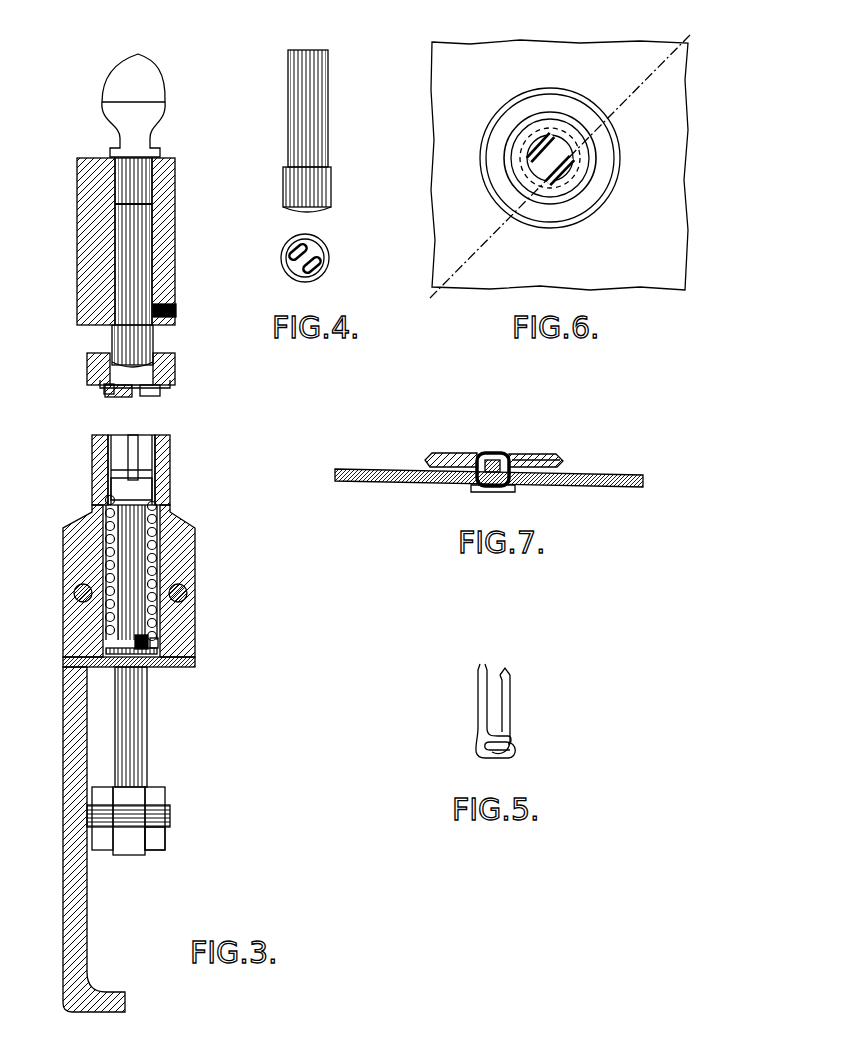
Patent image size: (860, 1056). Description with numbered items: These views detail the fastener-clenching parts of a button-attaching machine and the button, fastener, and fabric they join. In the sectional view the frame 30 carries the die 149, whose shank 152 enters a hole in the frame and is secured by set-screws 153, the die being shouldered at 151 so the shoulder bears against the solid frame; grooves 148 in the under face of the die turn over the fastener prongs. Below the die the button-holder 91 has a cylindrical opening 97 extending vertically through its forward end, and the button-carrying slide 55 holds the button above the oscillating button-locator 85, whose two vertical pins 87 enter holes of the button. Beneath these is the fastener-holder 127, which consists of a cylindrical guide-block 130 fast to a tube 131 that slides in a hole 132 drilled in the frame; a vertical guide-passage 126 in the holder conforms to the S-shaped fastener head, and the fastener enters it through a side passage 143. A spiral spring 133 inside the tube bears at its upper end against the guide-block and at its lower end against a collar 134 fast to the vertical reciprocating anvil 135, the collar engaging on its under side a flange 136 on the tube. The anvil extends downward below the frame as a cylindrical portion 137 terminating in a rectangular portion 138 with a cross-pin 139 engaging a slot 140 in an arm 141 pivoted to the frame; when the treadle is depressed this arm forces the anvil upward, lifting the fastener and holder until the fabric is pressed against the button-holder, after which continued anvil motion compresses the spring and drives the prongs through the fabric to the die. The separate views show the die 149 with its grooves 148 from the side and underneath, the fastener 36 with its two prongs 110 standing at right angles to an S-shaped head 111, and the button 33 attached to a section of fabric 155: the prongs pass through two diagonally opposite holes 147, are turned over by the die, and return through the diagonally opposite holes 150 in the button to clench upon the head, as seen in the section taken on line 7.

In FIG. 6, the section line 7 7 is at (562, 171).
In FIG. 3, the frame 30 is at (80, 935).
In FIG. 6, the button 33 is at (535, 96).
In FIG. 7, the button 33 is at (560, 462).
In FIG. 5, the fastener 36 is at (478, 712).
In FIG. 3, the button-carrying slide 55 is at (104, 388).
In FIG. 3, the button-locator 85 is at (160, 392).
In FIG. 3, the vertical pins 87 is at (110, 392).
In FIG. 3, the button-holder 91 is at (87, 372).
In FIG. 3, the cylindrical opening 97 is at (92, 360).
In FIG. 6, the prongs 110 is at (565, 180).
In FIG. 7, the prongs 110 is at (495, 452).
In FIG. 5, the prongs 110 is at (478, 700).
In FIG. 7, the S-shaped head 111 is at (495, 492).
In FIG. 5, the S-shaped head 111 is at (472, 748).
In FIG. 3, the vertical guide-passage 126 is at (133, 445).
In FIG. 3, the fastener-holder 127 is at (111, 482).
In FIG. 3, the cylindrical guide-block 130 is at (155, 455).
In FIG. 3, the tube 131 is at (155, 480).
In FIG. 3, the hole 132 is at (160, 530).
In FIG. 3, the spiral spring 133 is at (157, 568).
In FIG. 3, the collar 134 is at (100, 648).
In FIG. 3, the anvil 135 is at (118, 618).
In FIG. 3, the flange 136 is at (160, 656).
In FIG. 3, the cylindrical portion 137 is at (147, 752).
In FIG. 3, the rectangular portion 138 is at (130, 803).
In FIG. 3, the cross-pin 139 is at (165, 820).
In FIG. 3, the slot 140 is at (165, 832).
In FIG. 3, the arm 141 is at (155, 845).
In FIG. 3, the side passage 143 is at (92, 450).
In FIG. 6, the holes 147 is at (575, 158).
In FIG. 7, the holes 147 is at (520, 454).
In FIG. 4, the grooves 148 is at (322, 213).
In FIG. 3, the die 149 is at (140, 358).
In FIG. 4, the die 149 is at (283, 200).
In FIG. 6, the holes 150 is at (545, 130).
In FIG. 7, the holes 150 is at (478, 480).
In FIG. 3, the shoulder 151 is at (153, 330).
In FIG. 4, the shoulder 151 is at (328, 165).
In FIG. 3, the shank 152 is at (175, 255).
In FIG. 3, the set-screws 153 is at (176, 312).
In FIG. 6, the fabric 155 is at (655, 278).
In FIG. 7, the fabric 155 is at (628, 485).